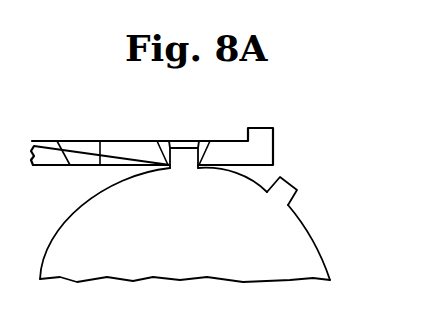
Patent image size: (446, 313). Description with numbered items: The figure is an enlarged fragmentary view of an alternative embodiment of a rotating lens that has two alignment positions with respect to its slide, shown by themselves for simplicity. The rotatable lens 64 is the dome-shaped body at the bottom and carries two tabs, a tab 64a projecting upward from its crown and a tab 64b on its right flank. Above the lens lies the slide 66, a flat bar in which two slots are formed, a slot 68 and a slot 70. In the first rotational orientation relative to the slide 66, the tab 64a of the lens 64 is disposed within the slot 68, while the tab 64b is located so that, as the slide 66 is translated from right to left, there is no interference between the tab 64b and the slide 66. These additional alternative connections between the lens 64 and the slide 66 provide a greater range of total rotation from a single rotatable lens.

The rotatable lens 64 is at (275, 247).
The tab 64a is at (181, 157).
The tab 64b is at (285, 192).
The slide 66 is at (253, 155).
The slot 68 is at (160, 141).
The slot 70 is at (69, 141).